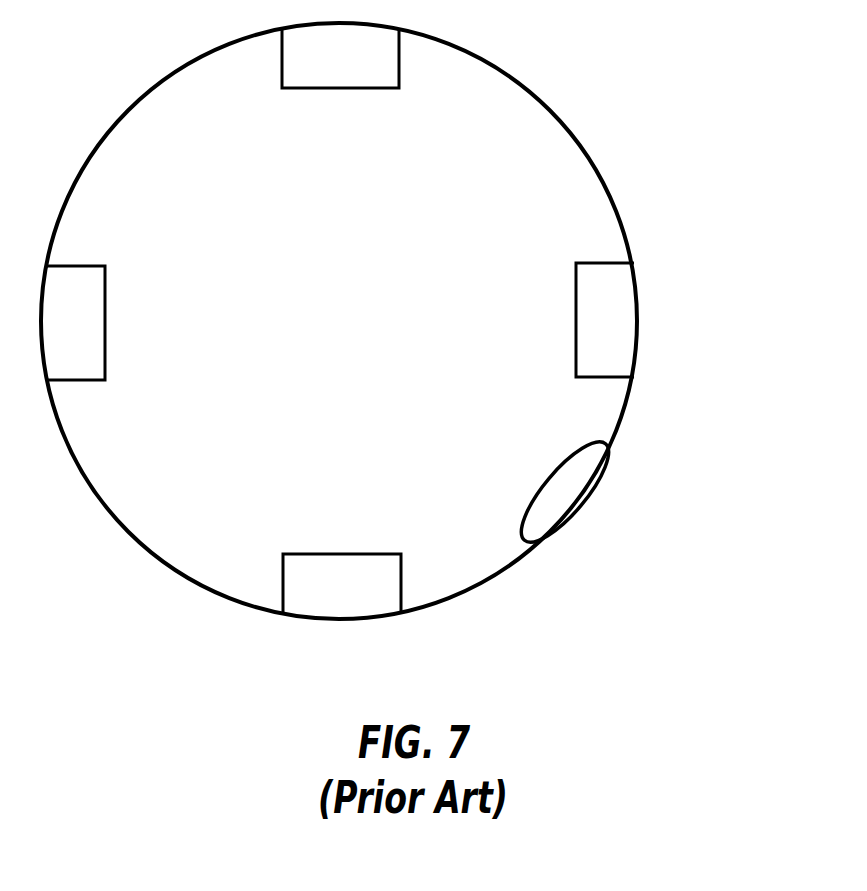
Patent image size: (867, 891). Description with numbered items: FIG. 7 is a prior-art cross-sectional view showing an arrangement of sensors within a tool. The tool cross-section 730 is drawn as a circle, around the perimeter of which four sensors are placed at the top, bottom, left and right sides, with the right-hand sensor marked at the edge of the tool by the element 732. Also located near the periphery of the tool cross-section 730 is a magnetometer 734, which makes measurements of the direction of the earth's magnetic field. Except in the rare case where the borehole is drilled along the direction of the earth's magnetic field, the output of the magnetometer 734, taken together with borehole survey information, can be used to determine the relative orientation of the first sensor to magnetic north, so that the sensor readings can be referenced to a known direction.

The tool cross-section 730 is at (590, 148).
The resistive sensing element 732 is at (642, 288).
The magnetometer 734 is at (592, 492).